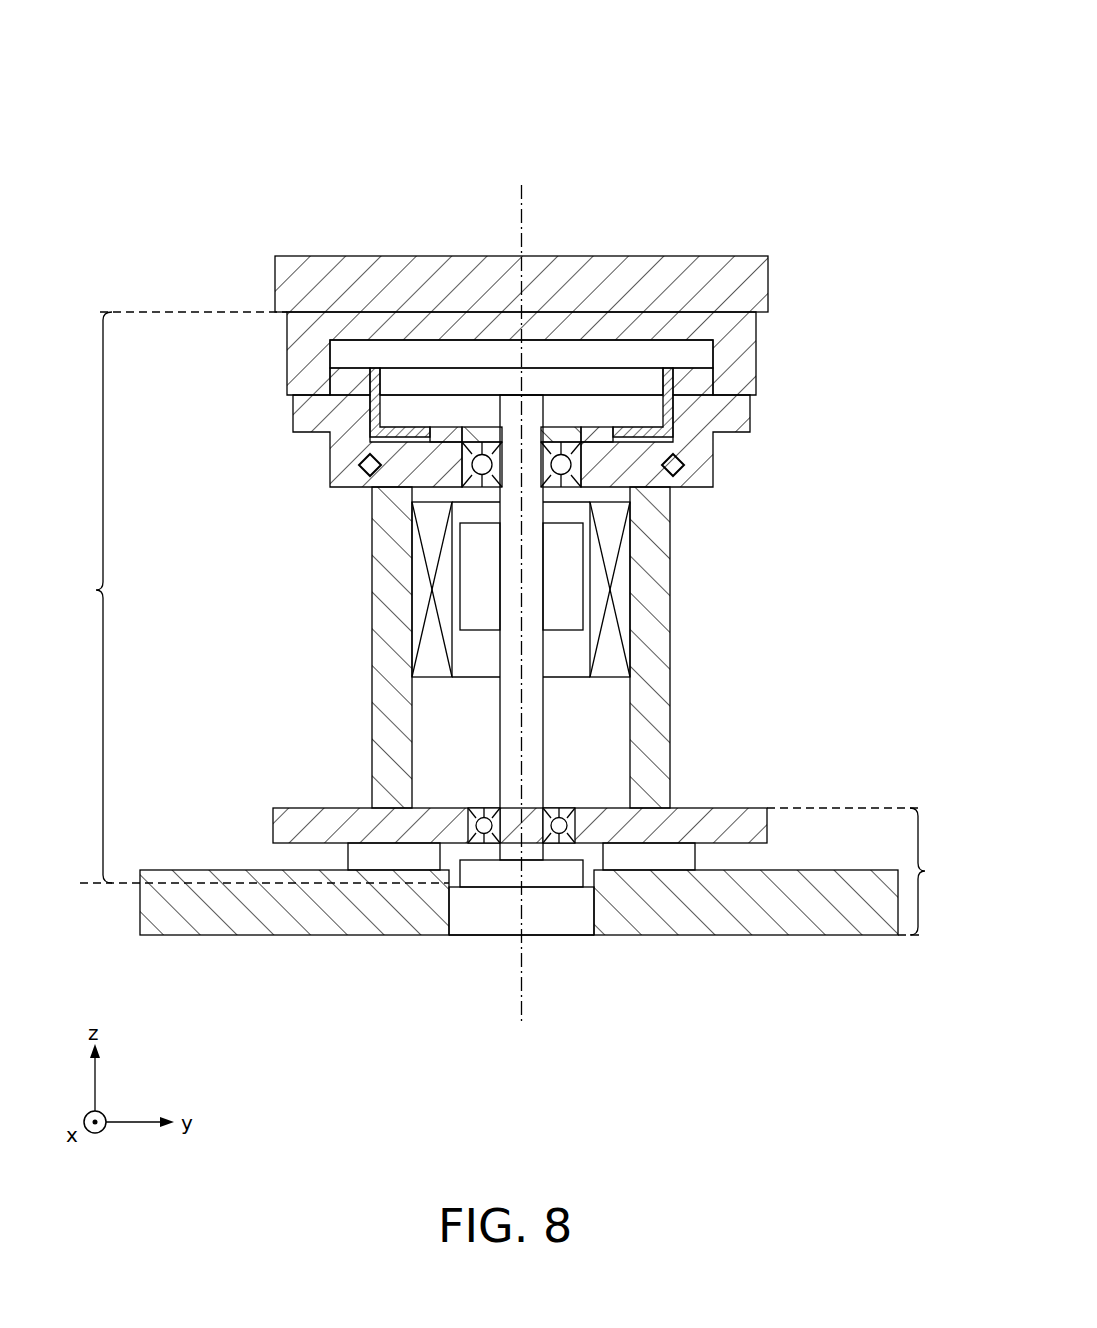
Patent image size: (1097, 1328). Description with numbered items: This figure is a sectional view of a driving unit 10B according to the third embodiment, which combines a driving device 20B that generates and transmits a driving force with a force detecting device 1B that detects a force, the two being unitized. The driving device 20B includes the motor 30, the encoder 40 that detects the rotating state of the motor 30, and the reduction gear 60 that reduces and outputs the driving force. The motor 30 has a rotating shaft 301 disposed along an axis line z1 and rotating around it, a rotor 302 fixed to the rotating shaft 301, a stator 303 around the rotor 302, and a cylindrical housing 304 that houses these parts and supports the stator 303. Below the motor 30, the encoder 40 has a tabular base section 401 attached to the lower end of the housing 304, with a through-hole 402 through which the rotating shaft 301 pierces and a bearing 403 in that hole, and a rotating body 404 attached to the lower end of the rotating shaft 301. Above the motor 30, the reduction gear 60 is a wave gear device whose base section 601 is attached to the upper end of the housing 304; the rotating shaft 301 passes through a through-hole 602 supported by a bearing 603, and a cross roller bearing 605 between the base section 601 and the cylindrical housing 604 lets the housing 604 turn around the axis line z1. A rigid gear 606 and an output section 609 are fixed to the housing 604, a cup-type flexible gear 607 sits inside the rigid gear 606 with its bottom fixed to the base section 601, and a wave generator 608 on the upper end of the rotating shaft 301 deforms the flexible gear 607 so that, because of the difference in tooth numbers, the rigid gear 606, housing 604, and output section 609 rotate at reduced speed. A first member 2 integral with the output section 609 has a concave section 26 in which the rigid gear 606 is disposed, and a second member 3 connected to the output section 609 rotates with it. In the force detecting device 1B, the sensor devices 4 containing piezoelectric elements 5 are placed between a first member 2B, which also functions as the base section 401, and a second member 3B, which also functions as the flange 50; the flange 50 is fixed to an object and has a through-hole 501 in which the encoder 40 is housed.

The driving unit 10B is at (768, 96).
The driving device 20B is at (459, 534).
The force detecting device 1B is at (549, 883).
The first member 2 is at (580, 353).
The output section 609 is at (758, 340).
The first member 2B is at (748, 822).
The second member 3 is at (720, 262).
The second member 3B is at (519, 942).
The concave section 26 is at (477, 357).
The motor 30 is at (587, 627).
The rotating shaft 301 is at (542, 741).
The rotor 302 is at (570, 570).
The stator 303 is at (613, 645).
The housing 304 is at (668, 693).
The encoder 40 is at (512, 941).
The base section 401 is at (585, 800).
The through-hole 402 is at (565, 810).
The bearing 403 is at (478, 810).
The rotating body 404 is at (480, 876).
The sensor devices 4 is at (545, 931).
The piezoelectric elements 5 is at (385, 857).
The flange 50 is at (519, 942).
The through-hole 501 is at (583, 915).
The reduction gear 60 is at (520, 499).
The base section 601 is at (392, 477).
The through-hole 602 is at (470, 478).
The bearing 603 is at (575, 482).
The housing 604 is at (322, 445).
The cross roller bearing 605 is at (335, 475).
The rigid gear 606 is at (352, 382).
The flexible gear 607 is at (672, 410).
The wave generator 608 is at (403, 377).
The axis line z1 is at (520, 997).